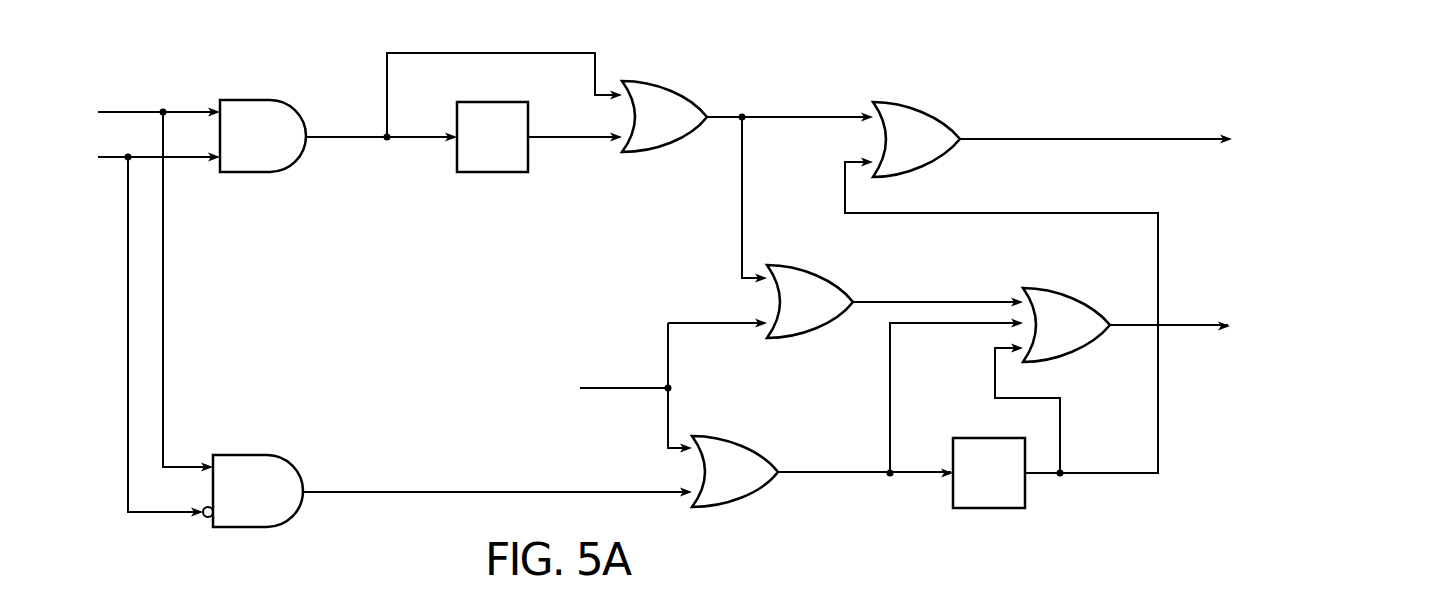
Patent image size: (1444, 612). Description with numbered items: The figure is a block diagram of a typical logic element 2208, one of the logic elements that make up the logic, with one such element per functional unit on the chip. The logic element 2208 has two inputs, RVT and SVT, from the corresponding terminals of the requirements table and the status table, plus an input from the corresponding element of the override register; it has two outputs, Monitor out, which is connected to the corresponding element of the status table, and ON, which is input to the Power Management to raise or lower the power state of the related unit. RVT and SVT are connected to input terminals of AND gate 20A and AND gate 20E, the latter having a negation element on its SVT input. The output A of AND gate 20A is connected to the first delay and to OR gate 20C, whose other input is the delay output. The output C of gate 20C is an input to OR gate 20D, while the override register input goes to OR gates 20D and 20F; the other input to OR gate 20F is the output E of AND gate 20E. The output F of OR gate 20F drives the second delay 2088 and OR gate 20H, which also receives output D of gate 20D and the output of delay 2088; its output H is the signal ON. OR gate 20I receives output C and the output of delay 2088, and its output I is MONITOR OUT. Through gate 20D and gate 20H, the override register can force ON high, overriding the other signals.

The logic element 2208 is at (1082, 90).
The AND gate 20A is at (263, 136).
The OR gate 20C is at (664, 116).
The OR gate 20D is at (810, 301).
The AND gate 20E is at (258, 491).
The OR gate 20F is at (735, 471).
The OR gate 20H is at (1066, 325).
The OR gate 20I is at (916, 139).
The delay 2088 is at (487, 172).